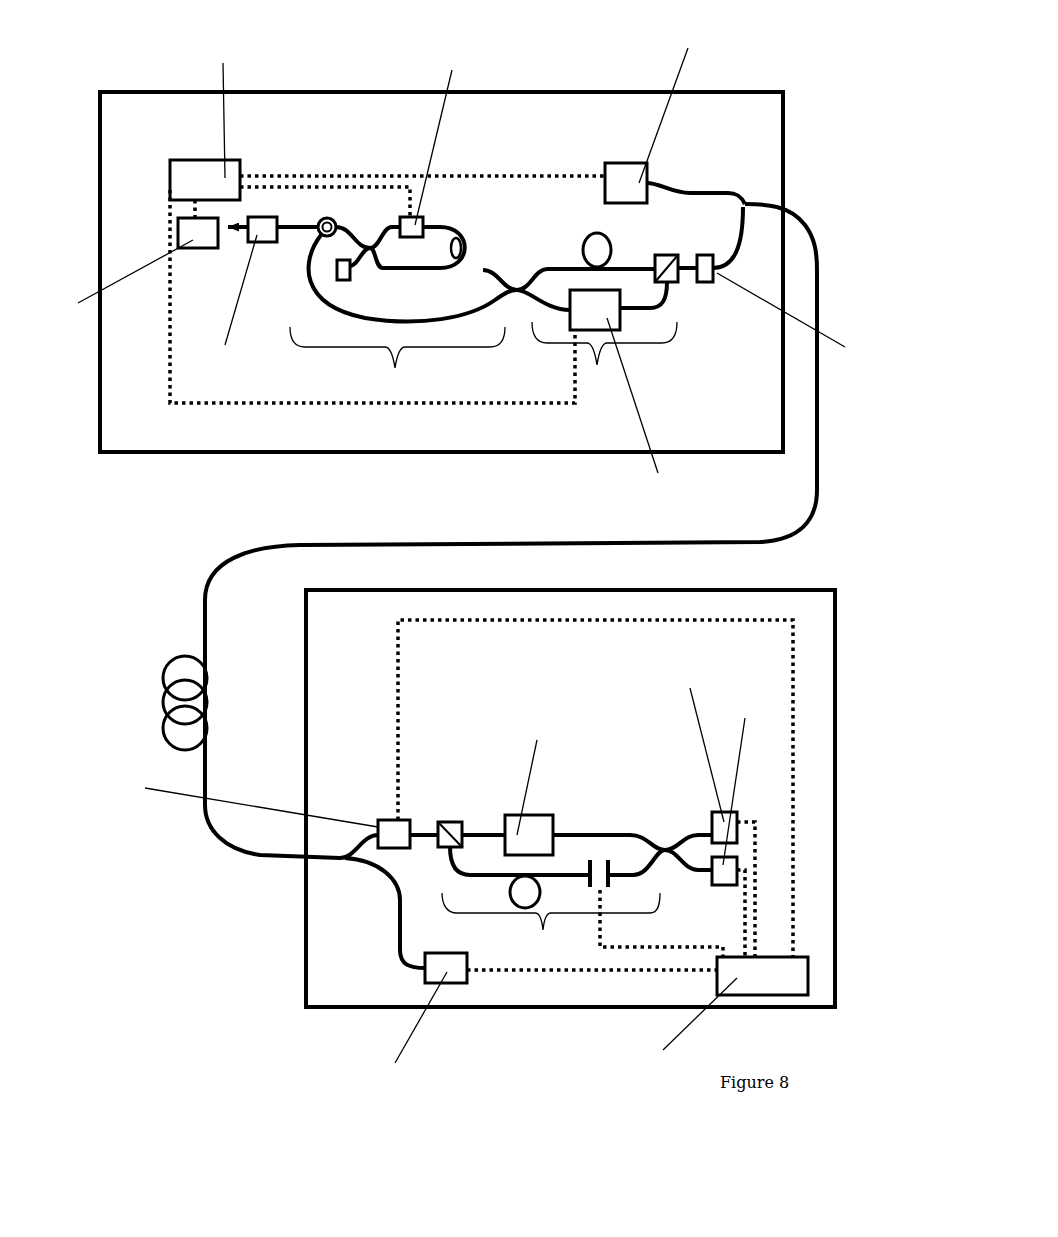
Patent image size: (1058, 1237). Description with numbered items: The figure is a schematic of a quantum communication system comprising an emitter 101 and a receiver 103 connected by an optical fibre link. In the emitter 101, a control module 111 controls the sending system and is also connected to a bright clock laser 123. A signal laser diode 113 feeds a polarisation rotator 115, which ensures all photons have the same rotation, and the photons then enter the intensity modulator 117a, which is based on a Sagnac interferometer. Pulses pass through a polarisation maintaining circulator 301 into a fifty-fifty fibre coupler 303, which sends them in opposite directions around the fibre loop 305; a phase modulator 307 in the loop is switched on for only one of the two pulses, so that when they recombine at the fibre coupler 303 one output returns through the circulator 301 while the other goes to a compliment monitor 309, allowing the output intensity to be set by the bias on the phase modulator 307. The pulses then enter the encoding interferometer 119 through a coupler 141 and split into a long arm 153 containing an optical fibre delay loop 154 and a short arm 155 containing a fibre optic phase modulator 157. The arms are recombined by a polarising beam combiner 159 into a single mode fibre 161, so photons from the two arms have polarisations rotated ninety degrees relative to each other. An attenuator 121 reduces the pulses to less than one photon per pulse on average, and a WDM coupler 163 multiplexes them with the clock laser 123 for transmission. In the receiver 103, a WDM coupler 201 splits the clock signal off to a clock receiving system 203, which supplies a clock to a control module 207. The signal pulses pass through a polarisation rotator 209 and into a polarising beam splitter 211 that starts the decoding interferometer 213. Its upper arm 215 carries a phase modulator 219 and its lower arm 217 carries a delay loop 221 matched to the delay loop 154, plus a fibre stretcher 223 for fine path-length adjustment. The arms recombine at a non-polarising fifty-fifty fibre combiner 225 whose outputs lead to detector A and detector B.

The emitter 101 is at (495, 447).
The receiver 103 is at (302, 928).
The control module 111 is at (203, 178).
The signal laser diode 113 is at (196, 251).
The polarisation rotator 115 is at (263, 246).
The intensity modulator 117a is at (403, 319).
The encoding interferometer 119 is at (604, 356).
The attenuator 121 is at (714, 286).
The bright clock laser 123 is at (623, 172).
The coupler 141 is at (521, 266).
The long arm 153 is at (630, 263).
The optical fibre delay loop 154 is at (583, 242).
The short arm 155 is at (633, 313).
The fibre optic phase modulator 157 is at (568, 318).
The polarising beam combiner 159 is at (679, 288).
The single mode fibre 161 is at (741, 253).
The WDM coupler 163 is at (745, 200).
The WDM coupler 201 is at (377, 819).
The clock receiving system 203 is at (423, 972).
The control module 207 is at (715, 978).
The polarisation rotator 209 is at (400, 820).
The polarising beam splitter 211 is at (466, 812).
The decoding interferometer 213 is at (551, 929).
The upper arm 215 is at (601, 832).
The lower arm 217 is at (561, 884).
The phase modulator 219 is at (546, 808).
The delay loop 221 is at (508, 892).
The fibre stretcher 223 is at (614, 883).
The fibre combiner 225 is at (668, 843).
The polarisation maintaining circulator 301 is at (331, 216).
The fibre coupler 303 is at (375, 231).
The fibre loop 305 is at (453, 210).
The phase modulator 307 is at (428, 212).
The compliment monitor 309 is at (355, 283).